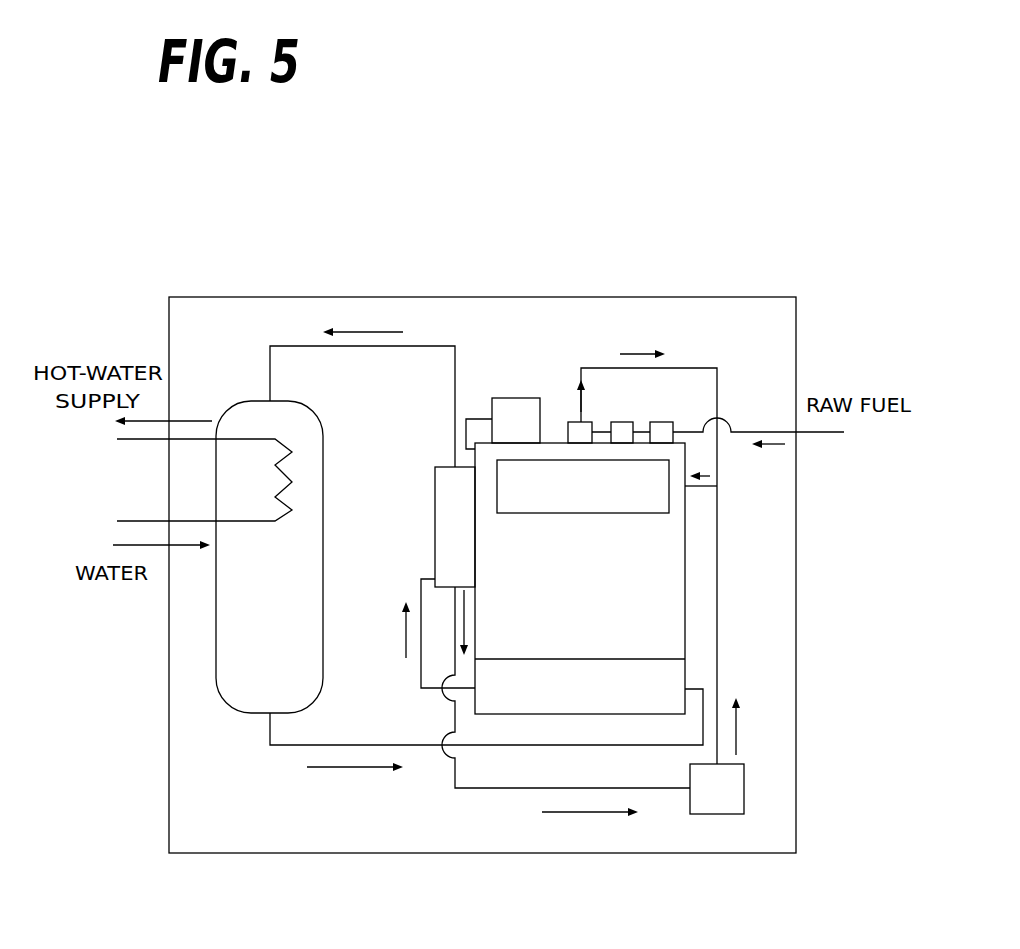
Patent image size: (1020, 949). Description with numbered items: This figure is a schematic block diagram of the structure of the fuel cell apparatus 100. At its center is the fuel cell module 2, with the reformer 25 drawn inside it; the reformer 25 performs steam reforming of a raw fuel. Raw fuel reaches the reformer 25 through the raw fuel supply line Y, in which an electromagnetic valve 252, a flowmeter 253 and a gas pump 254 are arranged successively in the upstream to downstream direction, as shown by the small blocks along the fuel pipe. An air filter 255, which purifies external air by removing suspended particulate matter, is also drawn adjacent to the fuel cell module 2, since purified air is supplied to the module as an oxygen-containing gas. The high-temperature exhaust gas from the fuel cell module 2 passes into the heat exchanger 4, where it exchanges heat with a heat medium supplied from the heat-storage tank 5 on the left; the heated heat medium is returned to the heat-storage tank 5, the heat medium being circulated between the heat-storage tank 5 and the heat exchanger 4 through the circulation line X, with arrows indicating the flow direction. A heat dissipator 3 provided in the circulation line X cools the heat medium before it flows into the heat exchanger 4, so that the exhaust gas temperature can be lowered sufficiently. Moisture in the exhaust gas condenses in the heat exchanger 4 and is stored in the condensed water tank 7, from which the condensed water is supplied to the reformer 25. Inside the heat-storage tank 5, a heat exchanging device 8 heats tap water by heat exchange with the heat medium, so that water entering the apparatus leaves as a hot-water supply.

The fuel cell apparatus 100 is at (190, 180).
The circulation line X is at (297, 345).
The raw fuel supply line Y is at (773, 432).
The fuel cell module 2 is at (661, 617).
The heat dissipator 3 is at (663, 678).
The heat exchanger 4 is at (447, 500).
The heat-storage tank 5 is at (232, 628).
The condensed water tank 7 is at (729, 791).
The heat exchanging device 8 is at (290, 483).
The reformer 25 is at (649, 498).
The electromagnetic valve 252 is at (667, 428).
The flowmeter 253 is at (623, 428).
The gas pump 254 is at (566, 422).
The air filter 255 is at (514, 424).